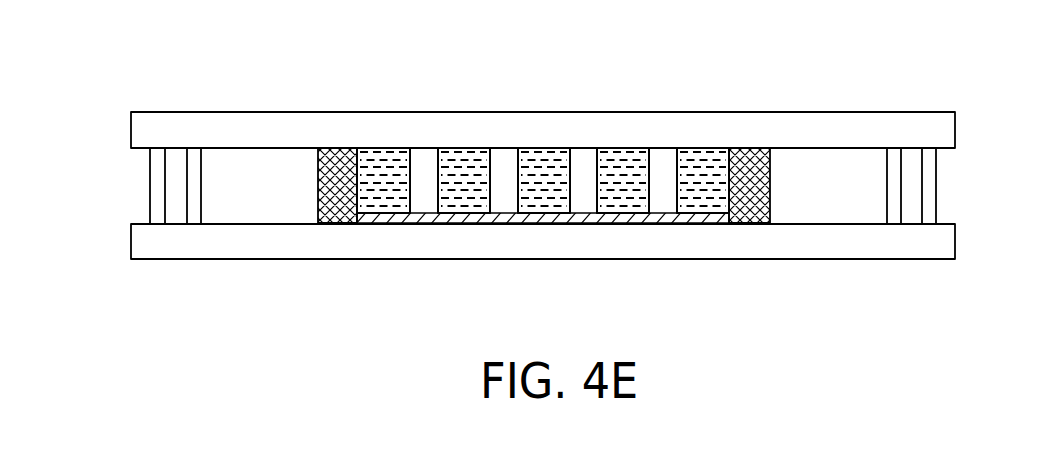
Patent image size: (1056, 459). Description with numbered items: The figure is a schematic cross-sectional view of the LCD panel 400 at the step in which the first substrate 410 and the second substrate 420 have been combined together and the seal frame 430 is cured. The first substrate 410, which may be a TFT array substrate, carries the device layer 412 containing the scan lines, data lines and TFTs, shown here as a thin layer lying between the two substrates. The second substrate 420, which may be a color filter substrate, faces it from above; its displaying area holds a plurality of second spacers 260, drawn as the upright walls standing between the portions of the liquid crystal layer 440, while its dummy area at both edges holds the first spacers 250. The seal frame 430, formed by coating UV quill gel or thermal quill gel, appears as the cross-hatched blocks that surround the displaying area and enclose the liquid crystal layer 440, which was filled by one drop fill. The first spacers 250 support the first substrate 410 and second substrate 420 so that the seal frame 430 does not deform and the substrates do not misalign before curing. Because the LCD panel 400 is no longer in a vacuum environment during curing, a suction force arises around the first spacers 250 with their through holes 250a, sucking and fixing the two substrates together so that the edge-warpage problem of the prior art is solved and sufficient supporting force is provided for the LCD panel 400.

The LCD panel 400 is at (551, 190).
The first substrate 410 is at (937, 243).
The device layer 412 is at (543, 222).
The second substrate 420 is at (932, 130).
The seal frame 430 is at (343, 162).
The liquid crystal layer 440 is at (473, 165).
The first spacers 250 is at (139, 191).
The through holes 250a is at (176, 192).
The second spacers 260 is at (503, 197).